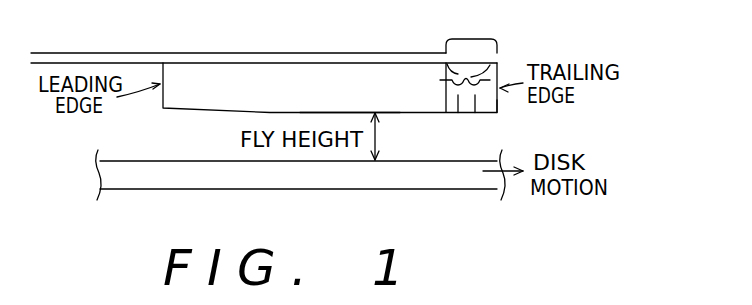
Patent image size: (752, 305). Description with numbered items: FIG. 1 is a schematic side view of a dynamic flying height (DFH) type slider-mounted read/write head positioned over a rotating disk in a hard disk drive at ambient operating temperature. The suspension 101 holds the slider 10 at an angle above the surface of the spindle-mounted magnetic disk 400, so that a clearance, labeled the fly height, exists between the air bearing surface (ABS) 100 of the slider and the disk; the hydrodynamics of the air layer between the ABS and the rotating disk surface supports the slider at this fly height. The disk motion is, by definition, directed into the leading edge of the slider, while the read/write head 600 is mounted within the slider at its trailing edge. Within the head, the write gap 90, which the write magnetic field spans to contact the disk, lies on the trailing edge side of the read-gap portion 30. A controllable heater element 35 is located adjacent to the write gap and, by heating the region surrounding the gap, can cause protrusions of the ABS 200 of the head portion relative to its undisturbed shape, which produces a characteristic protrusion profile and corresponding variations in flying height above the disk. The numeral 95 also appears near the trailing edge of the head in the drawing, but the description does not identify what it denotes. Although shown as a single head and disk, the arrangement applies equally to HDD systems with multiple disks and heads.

The slider 10 is at (253, 73).
The air bearing surface 100 is at (310, 113).
The suspension 101 is at (92, 57).
The heater element 35 is at (443, 68).
The read/write head 600 is at (470, 34).
The shield 95 is at (497, 65).
The read-gap portion 30 is at (457, 112).
The write gap 90 is at (474, 112).
The ABS of the head portion 200 is at (497, 112).
The magnetic disk 400 is at (452, 180).